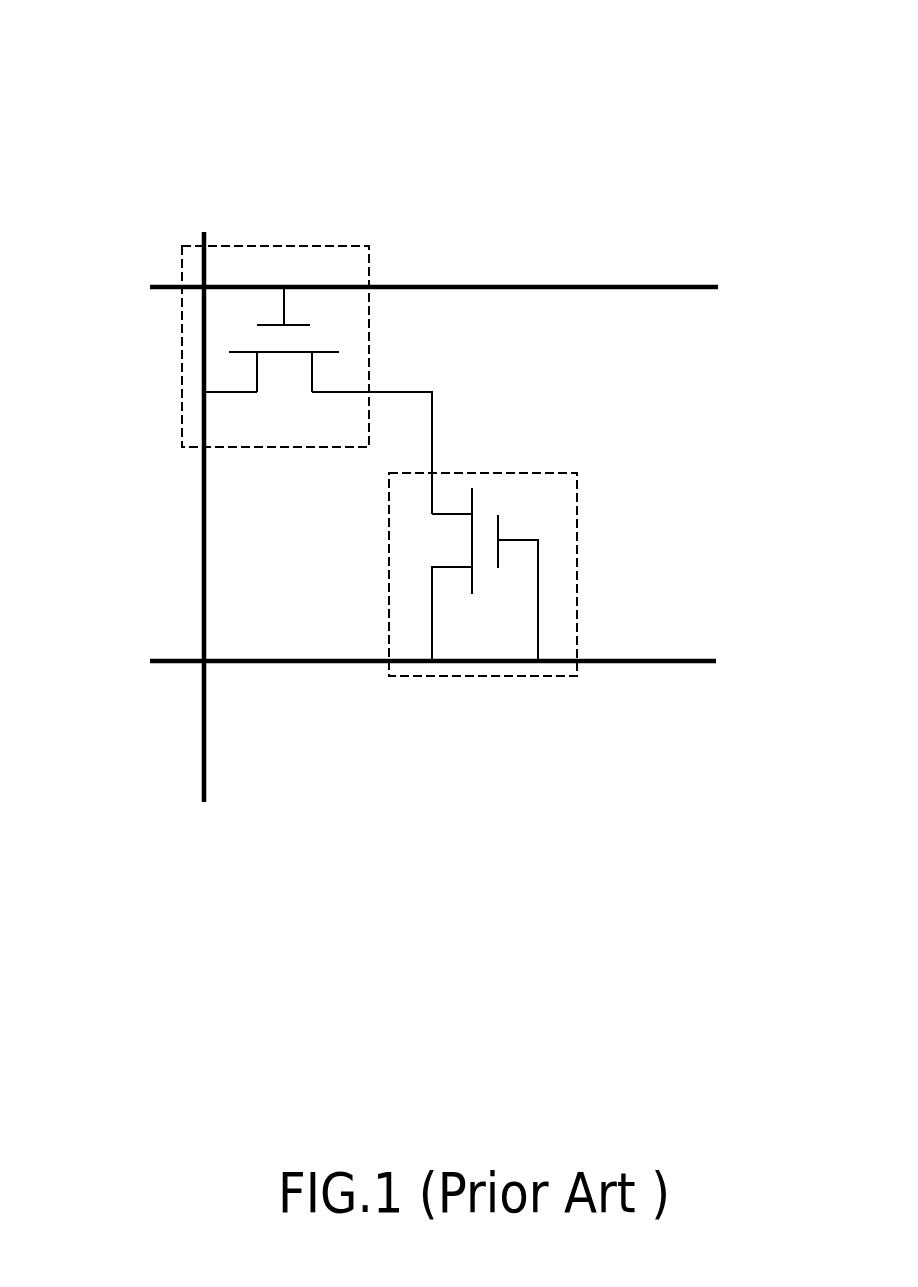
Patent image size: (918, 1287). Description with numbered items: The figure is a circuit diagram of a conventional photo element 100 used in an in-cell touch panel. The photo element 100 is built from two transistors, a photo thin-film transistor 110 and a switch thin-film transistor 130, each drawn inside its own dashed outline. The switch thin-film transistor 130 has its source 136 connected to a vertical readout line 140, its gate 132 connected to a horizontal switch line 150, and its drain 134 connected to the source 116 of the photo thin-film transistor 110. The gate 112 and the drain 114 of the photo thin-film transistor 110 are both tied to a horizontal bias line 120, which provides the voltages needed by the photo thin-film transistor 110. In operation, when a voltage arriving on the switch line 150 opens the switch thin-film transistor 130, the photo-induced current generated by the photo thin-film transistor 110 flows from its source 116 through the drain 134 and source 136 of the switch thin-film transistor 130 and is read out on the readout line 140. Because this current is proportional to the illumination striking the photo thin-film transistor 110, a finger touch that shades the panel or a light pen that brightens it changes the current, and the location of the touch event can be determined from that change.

The photo element 100 is at (206, 94).
The photo thin-film transistor 110 is at (577, 532).
The gate 112 is at (520, 542).
The drain 114 is at (432, 608).
The source 116 is at (430, 482).
The bias line 120 is at (665, 663).
The switch thin-film transistor 130 is at (237, 246).
The gate 132 is at (284, 307).
The drain 134 is at (342, 394).
The source 136 is at (232, 394).
The readout line 140 is at (204, 755).
The switch line 150 is at (617, 285).